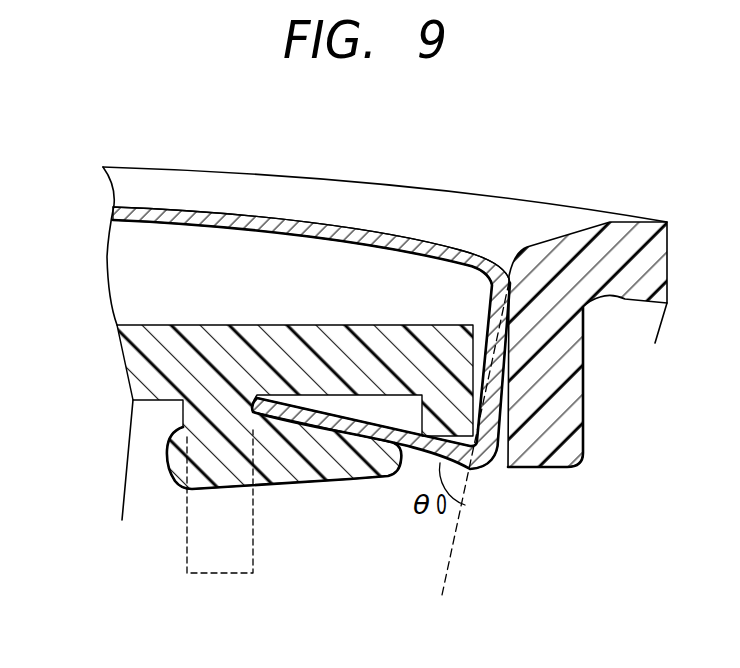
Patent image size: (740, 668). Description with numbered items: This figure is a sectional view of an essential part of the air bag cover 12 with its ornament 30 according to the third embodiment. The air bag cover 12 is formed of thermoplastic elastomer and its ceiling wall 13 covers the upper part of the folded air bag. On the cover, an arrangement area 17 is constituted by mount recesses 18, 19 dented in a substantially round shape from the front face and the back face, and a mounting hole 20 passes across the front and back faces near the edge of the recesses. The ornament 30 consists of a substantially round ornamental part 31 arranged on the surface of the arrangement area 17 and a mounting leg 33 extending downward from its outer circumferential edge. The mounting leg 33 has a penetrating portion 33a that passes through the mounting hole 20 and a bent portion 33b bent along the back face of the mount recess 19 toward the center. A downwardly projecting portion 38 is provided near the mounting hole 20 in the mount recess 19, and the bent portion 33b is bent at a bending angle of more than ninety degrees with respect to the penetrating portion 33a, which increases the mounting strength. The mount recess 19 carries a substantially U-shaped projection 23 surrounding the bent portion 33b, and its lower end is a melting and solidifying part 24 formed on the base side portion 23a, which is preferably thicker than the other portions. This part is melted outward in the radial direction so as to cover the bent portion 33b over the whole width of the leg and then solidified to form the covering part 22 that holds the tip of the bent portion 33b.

The air bag cover 12 is at (637, 290).
The ceiling wall 13 is at (676, 367).
The arrangement area 17 is at (140, 259).
The mount recess 18 is at (205, 322).
The mount recess 19 is at (153, 402).
The mounting hole 20 is at (482, 333).
The covering part 22 is at (252, 426).
The projection 23 is at (200, 494).
The base side portion 23a is at (198, 524).
The melting and solidifying part 24 is at (217, 540).
The ornament 30 is at (308, 192).
The ornamental part 31 is at (260, 213).
The mounting leg 33 is at (493, 483).
The penetrating portion 33a is at (395, 428).
The bent portion 33b is at (310, 422).
The downwardly projecting portion 38 is at (394, 472).